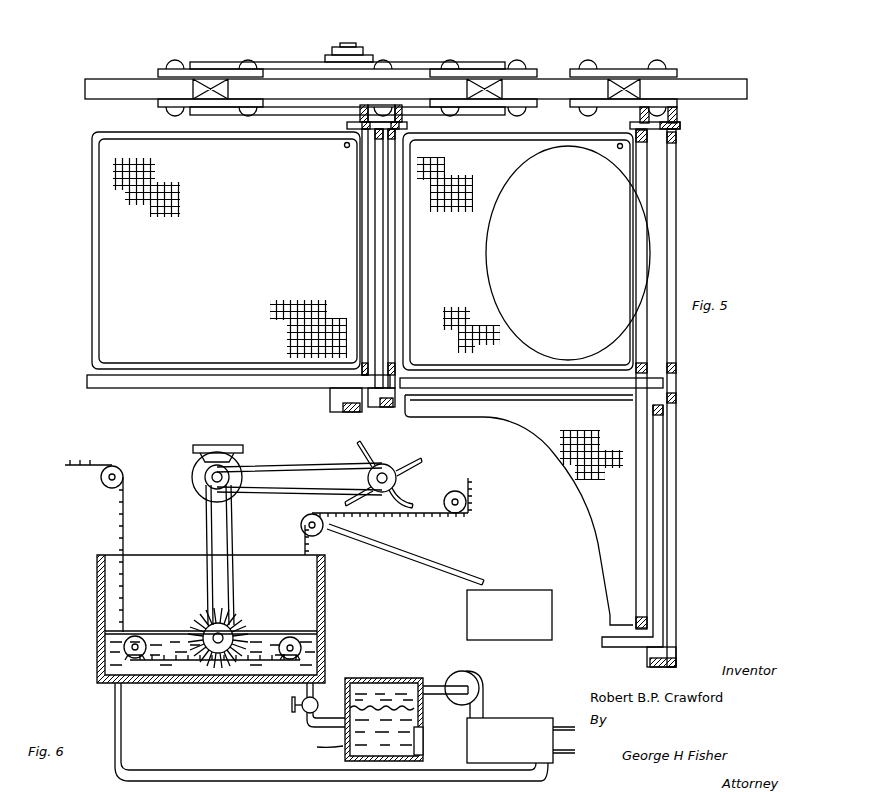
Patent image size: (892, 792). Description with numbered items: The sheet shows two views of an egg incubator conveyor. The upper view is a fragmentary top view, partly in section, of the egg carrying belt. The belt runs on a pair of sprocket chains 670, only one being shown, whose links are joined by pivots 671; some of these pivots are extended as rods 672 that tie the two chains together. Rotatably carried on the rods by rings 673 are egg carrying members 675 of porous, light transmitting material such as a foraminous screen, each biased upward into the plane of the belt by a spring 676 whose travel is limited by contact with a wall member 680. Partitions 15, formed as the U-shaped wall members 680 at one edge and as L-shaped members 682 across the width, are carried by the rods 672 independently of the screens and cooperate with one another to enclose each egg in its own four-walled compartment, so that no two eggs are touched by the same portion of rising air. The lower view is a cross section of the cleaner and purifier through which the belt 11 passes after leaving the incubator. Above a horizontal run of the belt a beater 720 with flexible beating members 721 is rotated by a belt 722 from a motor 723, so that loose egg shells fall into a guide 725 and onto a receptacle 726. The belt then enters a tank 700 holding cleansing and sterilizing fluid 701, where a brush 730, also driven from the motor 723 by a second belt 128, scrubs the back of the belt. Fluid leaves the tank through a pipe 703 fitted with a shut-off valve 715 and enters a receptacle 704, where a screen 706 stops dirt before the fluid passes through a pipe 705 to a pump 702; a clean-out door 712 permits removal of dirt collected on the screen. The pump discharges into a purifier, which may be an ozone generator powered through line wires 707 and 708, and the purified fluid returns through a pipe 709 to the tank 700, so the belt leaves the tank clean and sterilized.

In FIG. 5, the sprocket chains 670 is at (550, 85).
In FIG. 5, the pivots 671 is at (380, 62).
In FIG. 5, the partitions 15 is at (382, 262).
In FIG. 5, the egg carrying members 675 is at (460, 266).
In FIG. 5, the wall members 680 is at (395, 227).
In FIG. 5, the springs 676 is at (680, 132).
In FIG. 5, the rings 673 is at (678, 405).
In FIG. 5, the rods 672 is at (385, 398).
In FIG. 5, the L-shaped members 682 is at (658, 525).
In FIG. 6, the motor 723 is at (220, 444).
In FIG. 6, the belt 722 is at (282, 468).
In FIG. 6, the brush drive belt 128 is at (233, 538).
In FIG. 6, the beater 720 is at (377, 464).
In FIG. 6, the flexible beating members 721 is at (386, 474).
In FIG. 6, the belt 11 is at (386, 516).
In FIG. 6, the guide 725 is at (424, 568).
In FIG. 6, the receptacle 726 is at (514, 590).
In FIG. 6, the tank 700 is at (325, 613).
In FIG. 6, the brush 730 is at (227, 628).
In FIG. 6, the cleansing and sterilizing fluid 701 is at (322, 653).
In FIG. 6, the pipe 709 is at (205, 762).
In FIG. 6, the pipe 703 is at (316, 700).
In FIG. 6, the shut-off valve 715 is at (306, 712).
In FIG. 6, the receptacle 704 is at (378, 680).
In FIG. 6, the screen 706 is at (418, 712).
In FIG. 6, the clean-out door 712 is at (424, 745).
In FIG. 6, the pipe 705 is at (437, 683).
In FIG. 6, the pump 702 is at (474, 681).
In FIG. 6, the line wire 707 is at (563, 725).
In FIG. 6, the line wire 708 is at (565, 755).